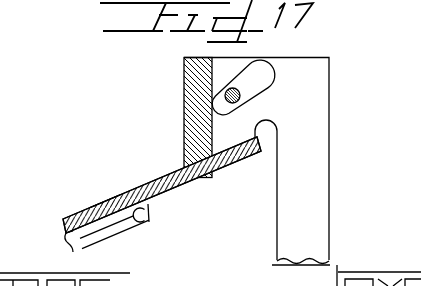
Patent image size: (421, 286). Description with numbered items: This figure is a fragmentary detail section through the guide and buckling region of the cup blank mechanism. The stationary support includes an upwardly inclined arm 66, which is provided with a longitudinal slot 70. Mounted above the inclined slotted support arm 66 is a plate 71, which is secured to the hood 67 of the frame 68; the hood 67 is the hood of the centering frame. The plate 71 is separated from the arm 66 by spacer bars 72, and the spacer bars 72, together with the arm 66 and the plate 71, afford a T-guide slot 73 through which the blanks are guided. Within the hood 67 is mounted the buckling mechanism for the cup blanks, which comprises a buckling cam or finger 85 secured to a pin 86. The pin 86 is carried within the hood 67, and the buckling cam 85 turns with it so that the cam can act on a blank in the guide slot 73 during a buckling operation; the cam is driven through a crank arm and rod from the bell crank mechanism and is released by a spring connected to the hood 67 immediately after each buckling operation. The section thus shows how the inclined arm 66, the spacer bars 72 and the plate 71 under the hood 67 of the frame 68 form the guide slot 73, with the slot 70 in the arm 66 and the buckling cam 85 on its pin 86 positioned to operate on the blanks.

The upwardly inclined arm 66 is at (113, 237).
The hood 67 is at (191, 115).
The frame 68 is at (315, 228).
The longitudinal slot 70 is at (144, 209).
The plate 71 is at (105, 203).
The spacer bars 72 is at (87, 230).
The T-guide slot 73 is at (172, 183).
The buckling cam 85 is at (268, 83).
The pin 86 is at (242, 98).